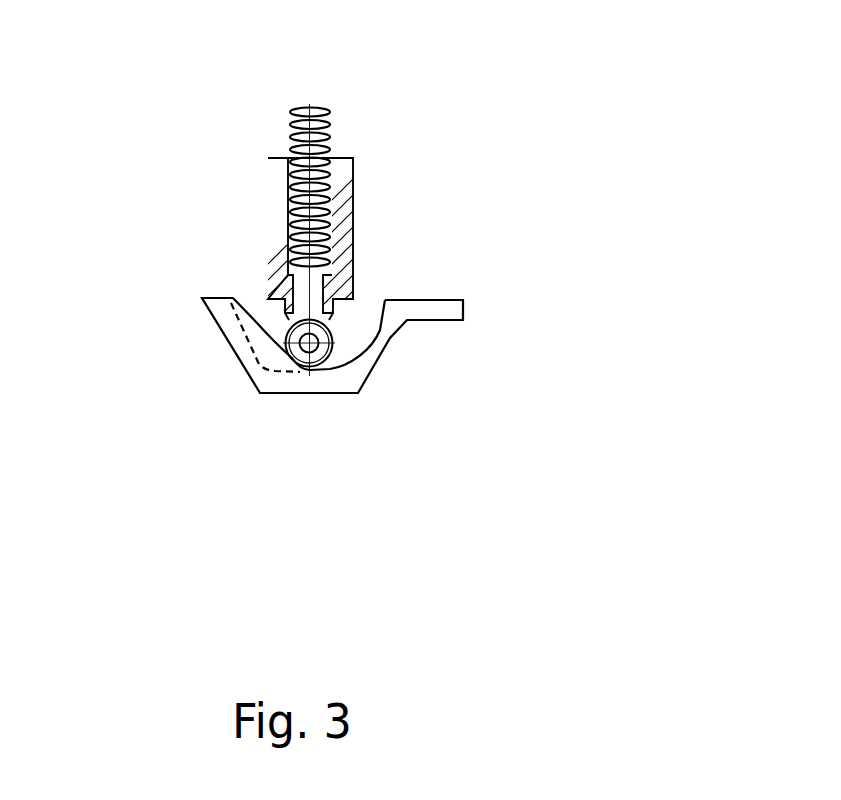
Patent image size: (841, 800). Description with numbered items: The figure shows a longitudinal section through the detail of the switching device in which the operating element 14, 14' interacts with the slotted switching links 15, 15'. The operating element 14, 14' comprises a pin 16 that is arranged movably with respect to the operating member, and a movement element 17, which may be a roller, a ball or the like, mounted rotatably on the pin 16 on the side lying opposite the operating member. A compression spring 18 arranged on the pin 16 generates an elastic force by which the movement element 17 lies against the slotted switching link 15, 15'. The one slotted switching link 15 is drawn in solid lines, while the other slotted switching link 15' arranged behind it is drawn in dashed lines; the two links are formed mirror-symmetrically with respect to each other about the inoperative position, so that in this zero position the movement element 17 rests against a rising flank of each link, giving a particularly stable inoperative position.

The operating element 14 is at (280, 245).
The operating element 14' is at (378, 245).
The slotted switching link 15 is at (362, 360).
The slotted switching link 15' is at (187, 353).
The pin 16 is at (349, 206).
The movement element 17 is at (328, 329).
The compression spring 18 is at (332, 108).